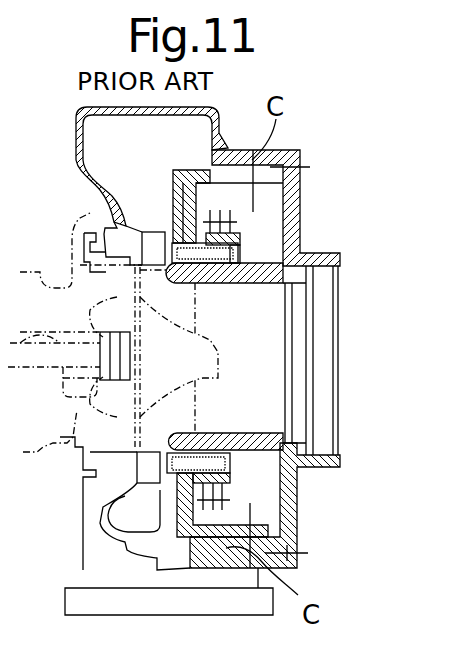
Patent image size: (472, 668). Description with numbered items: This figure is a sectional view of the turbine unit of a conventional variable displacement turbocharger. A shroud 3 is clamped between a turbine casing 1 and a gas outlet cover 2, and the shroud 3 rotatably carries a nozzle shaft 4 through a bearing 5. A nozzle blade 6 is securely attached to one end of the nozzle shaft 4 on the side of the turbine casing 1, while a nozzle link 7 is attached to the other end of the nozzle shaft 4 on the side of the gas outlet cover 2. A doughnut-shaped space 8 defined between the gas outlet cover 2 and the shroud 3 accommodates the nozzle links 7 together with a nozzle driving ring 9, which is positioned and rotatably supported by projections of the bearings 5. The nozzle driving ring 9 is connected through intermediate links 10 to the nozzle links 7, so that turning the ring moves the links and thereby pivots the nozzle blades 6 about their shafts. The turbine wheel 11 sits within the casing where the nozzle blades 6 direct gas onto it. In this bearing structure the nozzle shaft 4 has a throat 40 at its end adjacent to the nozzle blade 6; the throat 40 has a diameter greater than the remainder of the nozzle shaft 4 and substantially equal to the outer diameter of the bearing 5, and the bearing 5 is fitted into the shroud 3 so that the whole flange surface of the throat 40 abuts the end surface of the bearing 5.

The turbine casing 1 is at (76, 132).
The gas outlet cover 2 is at (300, 201).
The shroud 3 is at (263, 263).
The nozzle shaft 4 is at (197, 428).
The bearing 5 is at (241, 440).
The nozzle blade 6 is at (118, 200).
The nozzle link 7 is at (227, 490).
The doughnut-shaped space 8 is at (264, 492).
The nozzle driving ring 9 is at (211, 356).
The intermediate link 10 is at (227, 232).
The turbine wheel 11 is at (232, 338).
The throat 40 is at (165, 232).